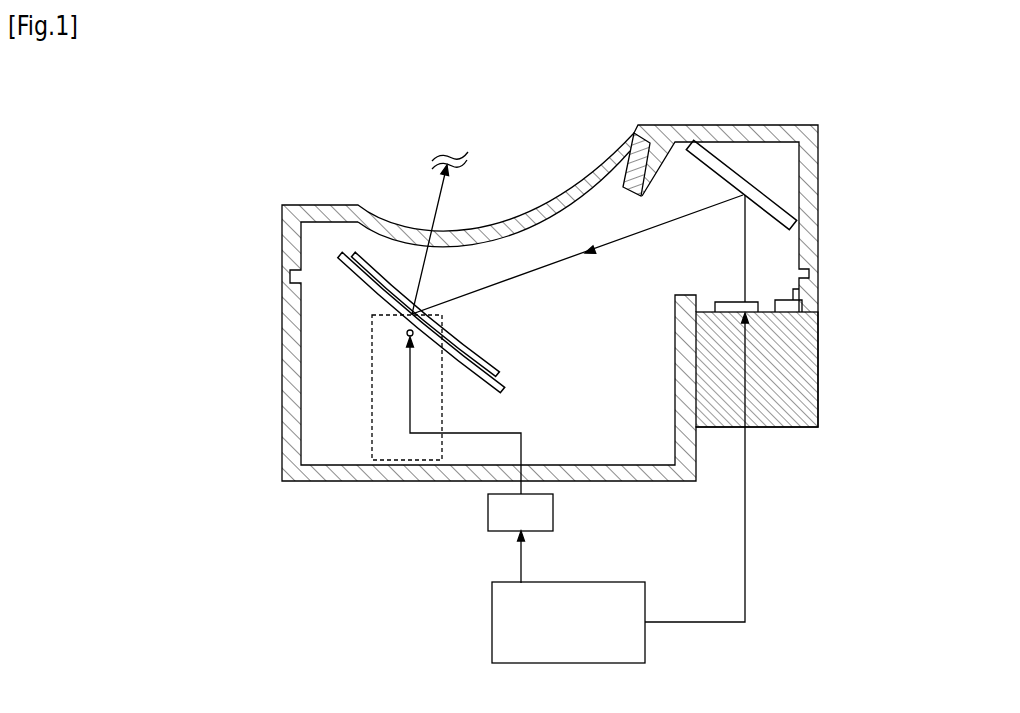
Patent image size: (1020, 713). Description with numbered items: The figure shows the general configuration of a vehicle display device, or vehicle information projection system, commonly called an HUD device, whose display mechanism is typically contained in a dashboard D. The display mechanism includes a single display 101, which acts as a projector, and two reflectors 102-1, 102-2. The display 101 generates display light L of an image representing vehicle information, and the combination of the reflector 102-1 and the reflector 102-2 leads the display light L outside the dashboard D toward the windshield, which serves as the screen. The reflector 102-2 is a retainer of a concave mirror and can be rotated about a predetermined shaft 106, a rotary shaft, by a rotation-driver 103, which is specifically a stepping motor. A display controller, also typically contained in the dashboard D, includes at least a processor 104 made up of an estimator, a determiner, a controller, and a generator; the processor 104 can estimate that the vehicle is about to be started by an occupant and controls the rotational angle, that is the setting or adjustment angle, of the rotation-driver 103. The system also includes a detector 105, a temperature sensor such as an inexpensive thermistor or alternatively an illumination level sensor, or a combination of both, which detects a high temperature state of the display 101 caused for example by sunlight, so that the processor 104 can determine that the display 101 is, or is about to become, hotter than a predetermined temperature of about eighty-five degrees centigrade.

The dashboard D is at (748, 124).
The display light L is at (548, 267).
The display 101 is at (735, 301).
The reflector 102-1 is at (765, 192).
The reflector 102-2 is at (348, 270).
The rotation-driver 103 is at (488, 511).
The processor 104 is at (492, 620).
The detector 105 is at (788, 297).
The predetermined shaft 106 is at (407, 336).